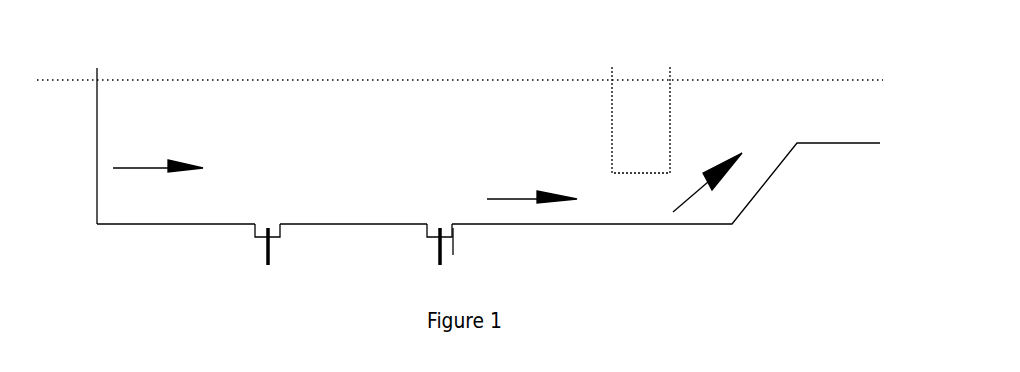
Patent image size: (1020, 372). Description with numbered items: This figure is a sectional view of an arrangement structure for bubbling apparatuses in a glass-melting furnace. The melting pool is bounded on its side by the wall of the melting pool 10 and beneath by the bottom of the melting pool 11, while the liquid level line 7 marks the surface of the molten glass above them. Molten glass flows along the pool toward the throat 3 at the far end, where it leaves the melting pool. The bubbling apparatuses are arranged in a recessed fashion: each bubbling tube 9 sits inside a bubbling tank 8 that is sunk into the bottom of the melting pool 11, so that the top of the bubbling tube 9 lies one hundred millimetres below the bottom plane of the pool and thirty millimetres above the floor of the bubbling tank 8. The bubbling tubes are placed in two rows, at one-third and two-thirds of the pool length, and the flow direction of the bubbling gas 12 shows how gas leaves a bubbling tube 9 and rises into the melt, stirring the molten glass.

The throat 3 is at (614, 127).
The liquid level line 7 is at (460, 54).
The bubbling tank 8 is at (283, 230).
The bubbling tube 9 is at (417, 212).
The wall of the melting pool 10 is at (98, 145).
The bottom of the melting pool 11 is at (115, 224).
The flow direction of the bubbling gas 12 is at (454, 253).